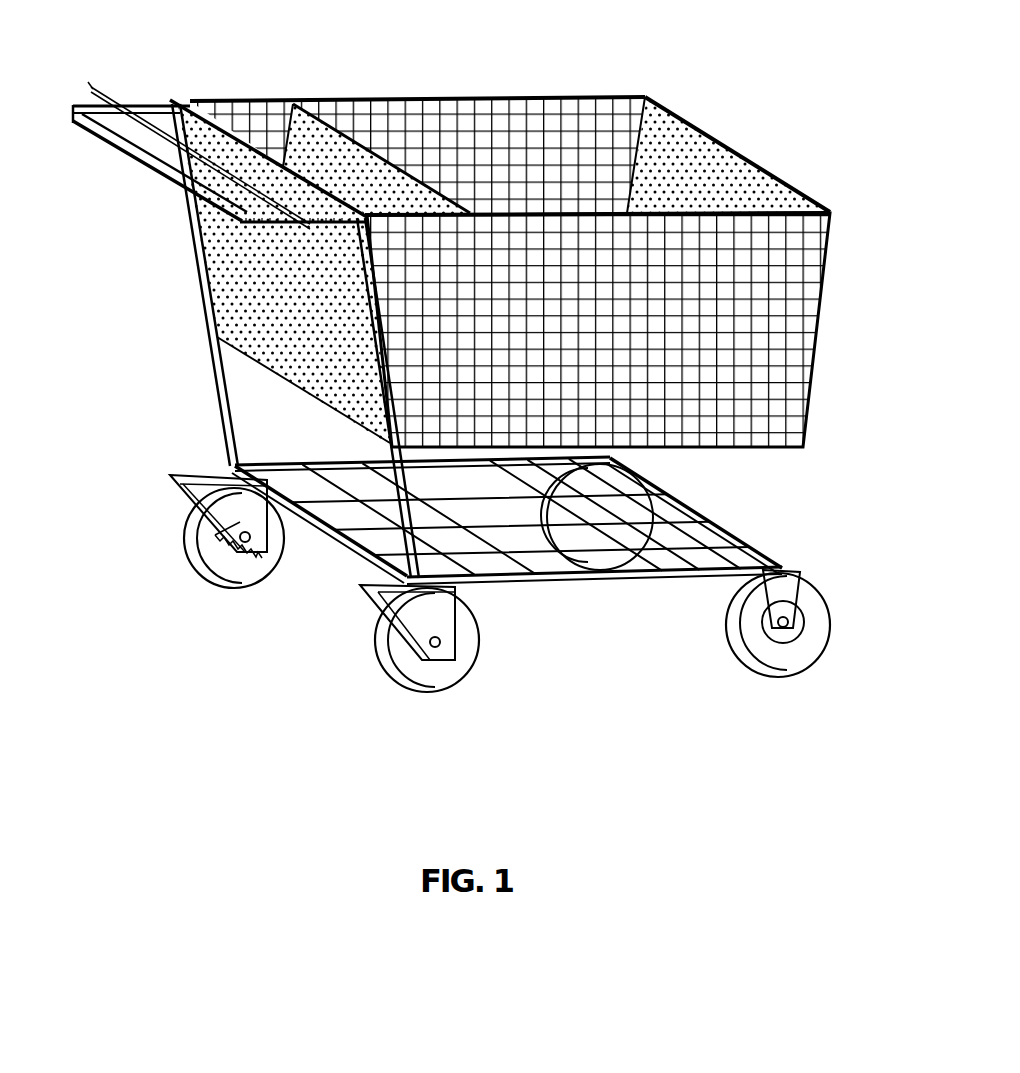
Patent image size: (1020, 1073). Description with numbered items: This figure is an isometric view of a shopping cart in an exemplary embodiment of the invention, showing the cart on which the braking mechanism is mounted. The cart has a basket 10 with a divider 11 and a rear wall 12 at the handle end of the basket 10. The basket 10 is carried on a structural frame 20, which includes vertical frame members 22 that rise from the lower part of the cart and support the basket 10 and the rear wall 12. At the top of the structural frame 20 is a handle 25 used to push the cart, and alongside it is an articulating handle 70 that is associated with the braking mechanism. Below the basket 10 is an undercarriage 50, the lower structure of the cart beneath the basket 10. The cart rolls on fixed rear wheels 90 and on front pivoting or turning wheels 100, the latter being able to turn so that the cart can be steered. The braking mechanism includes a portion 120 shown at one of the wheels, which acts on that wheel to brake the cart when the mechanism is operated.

The basket 10 is at (815, 370).
The divider 11 is at (305, 115).
The rear wall 12 is at (217, 130).
The structural frame 20 is at (195, 268).
The vertical frame members 22 is at (218, 452).
The handle 25 is at (105, 140).
The undercarriage 50 is at (600, 547).
The articulating handle 70 is at (93, 82).
The fixed rear wheels 90 is at (470, 613).
The front pivoting or turning wheels 100 is at (812, 598).
The braking mechanism portion 120 is at (210, 530).